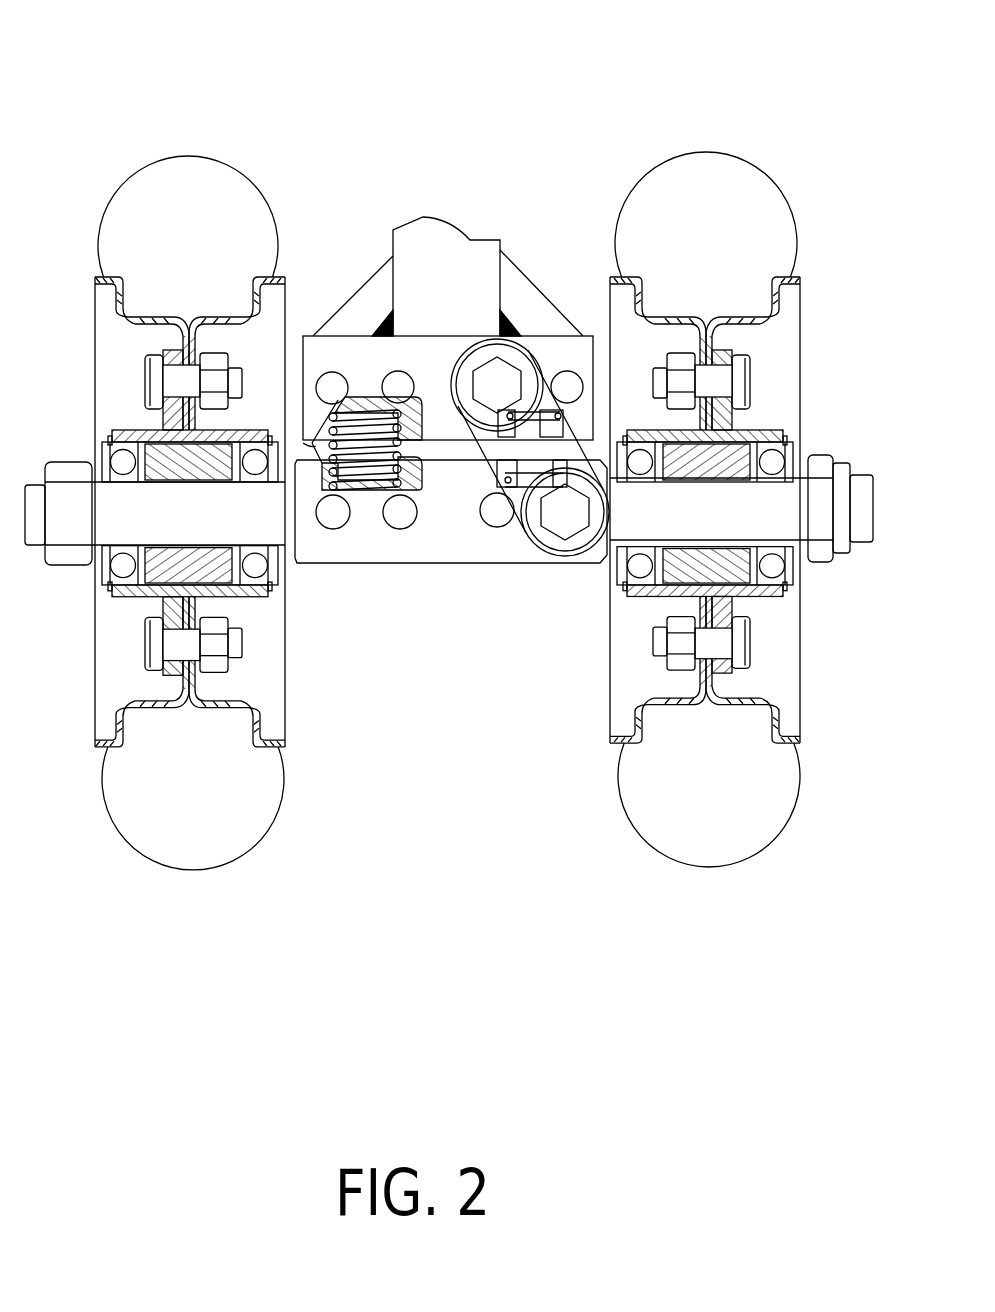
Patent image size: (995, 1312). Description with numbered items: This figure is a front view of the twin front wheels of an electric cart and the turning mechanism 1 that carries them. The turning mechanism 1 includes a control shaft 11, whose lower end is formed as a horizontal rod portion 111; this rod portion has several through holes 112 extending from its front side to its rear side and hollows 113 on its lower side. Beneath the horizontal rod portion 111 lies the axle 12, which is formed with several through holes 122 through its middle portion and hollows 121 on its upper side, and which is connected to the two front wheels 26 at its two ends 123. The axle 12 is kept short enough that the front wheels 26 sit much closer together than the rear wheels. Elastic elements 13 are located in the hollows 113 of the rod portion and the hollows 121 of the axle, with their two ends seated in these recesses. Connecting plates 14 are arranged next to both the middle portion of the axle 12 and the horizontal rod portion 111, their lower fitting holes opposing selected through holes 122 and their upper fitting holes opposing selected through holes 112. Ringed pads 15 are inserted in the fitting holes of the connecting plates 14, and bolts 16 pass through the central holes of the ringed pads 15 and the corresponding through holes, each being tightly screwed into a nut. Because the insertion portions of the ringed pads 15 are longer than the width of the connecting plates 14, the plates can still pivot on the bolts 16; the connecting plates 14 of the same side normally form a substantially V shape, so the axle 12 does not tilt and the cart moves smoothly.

The turning mechanism 1 is at (420, 157).
The control shaft 11 is at (475, 253).
The horizontal rod portion 111 is at (560, 347).
The through holes 112 is at (397, 383).
The hollows 113 is at (303, 443).
The axle 12 is at (445, 687).
The hollows 121 is at (442, 467).
The through holes 122 is at (333, 529).
The two ends 123 is at (217, 593).
The elastic elements 13 is at (368, 473).
The connecting plates 14 is at (472, 432).
The ringed pads 15 is at (543, 540).
The bolts 16 is at (570, 527).
The front wheels 26 is at (725, 880).